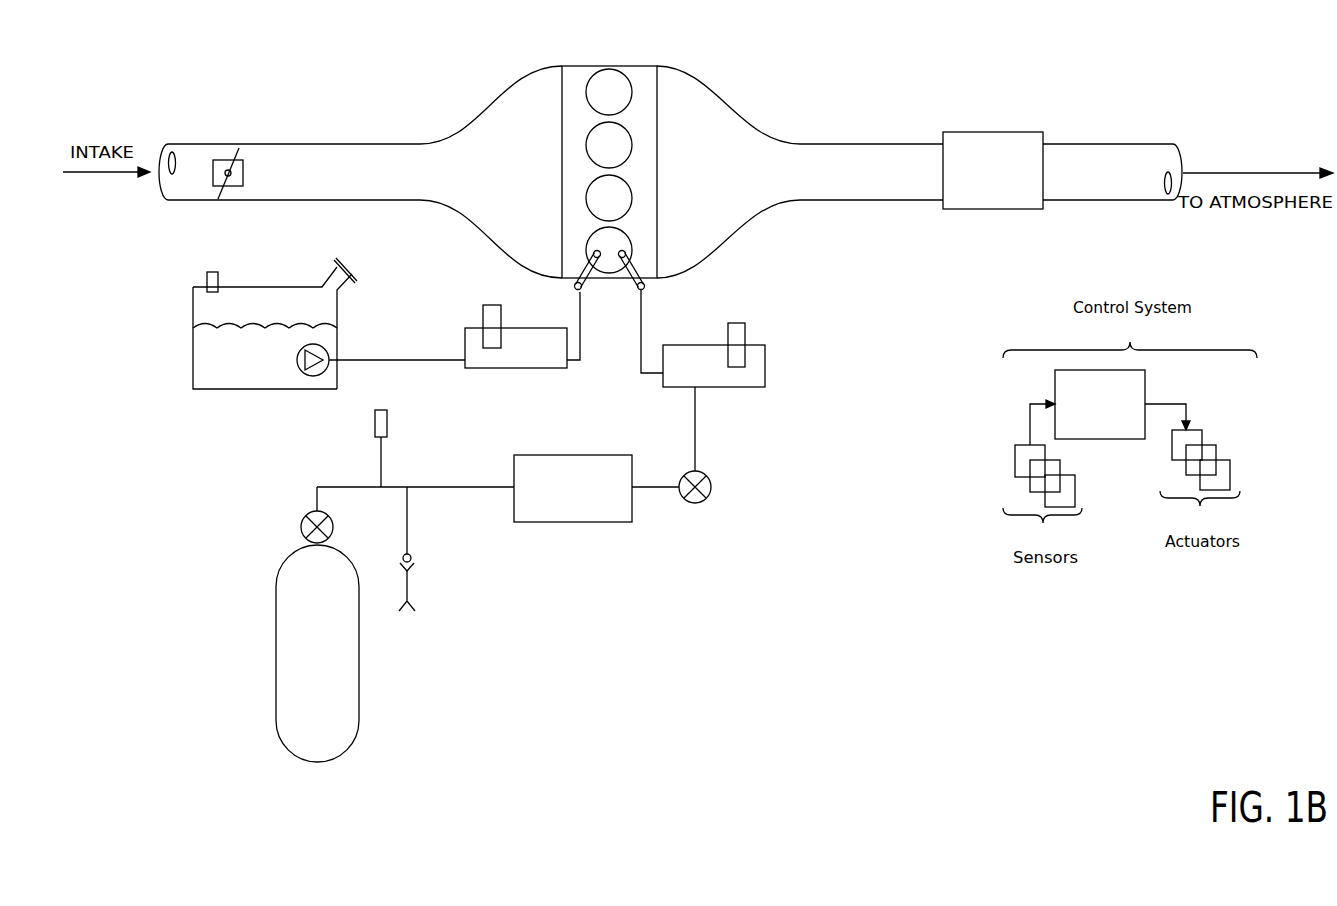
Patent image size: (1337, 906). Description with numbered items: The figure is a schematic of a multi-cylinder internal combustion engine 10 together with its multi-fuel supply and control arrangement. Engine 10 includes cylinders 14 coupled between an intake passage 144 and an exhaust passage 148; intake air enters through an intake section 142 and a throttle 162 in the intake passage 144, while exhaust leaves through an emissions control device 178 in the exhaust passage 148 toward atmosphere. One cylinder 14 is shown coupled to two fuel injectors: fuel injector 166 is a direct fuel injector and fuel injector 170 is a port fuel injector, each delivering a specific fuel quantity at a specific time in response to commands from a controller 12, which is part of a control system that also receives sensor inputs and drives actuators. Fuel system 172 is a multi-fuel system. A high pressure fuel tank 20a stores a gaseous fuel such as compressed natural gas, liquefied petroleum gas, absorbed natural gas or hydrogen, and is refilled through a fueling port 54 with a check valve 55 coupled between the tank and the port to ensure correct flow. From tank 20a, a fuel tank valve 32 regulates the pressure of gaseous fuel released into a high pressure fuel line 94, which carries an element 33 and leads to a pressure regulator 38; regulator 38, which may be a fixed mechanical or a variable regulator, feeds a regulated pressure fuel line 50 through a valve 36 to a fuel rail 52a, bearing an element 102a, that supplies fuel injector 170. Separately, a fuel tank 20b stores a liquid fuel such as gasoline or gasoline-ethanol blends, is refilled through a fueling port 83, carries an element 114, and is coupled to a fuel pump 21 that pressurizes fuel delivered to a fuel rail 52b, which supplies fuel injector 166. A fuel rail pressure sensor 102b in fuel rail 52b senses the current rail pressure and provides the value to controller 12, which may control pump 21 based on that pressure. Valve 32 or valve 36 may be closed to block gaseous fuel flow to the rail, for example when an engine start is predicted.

The internal combustion engine 10 is at (650, 49).
The controller 12 is at (1100, 404).
The cylinders 14 is at (630, 88).
The high pressure fuel tank 20a is at (317, 653).
The fuel tank 20b is at (193, 357).
The fuel pump 21 is at (297, 354).
The fuel tank valve 32 is at (302, 522).
The pressure sensor 33 is at (386, 410).
The valve 36 is at (712, 478).
The pressure regulator 38 is at (572, 455).
The regulated pressure fuel line 50 is at (697, 447).
The fuel rail 52a is at (702, 380).
The fuel rail 52b is at (557, 360).
The fueling port 54 is at (404, 610).
The check valve 55 is at (402, 553).
The fueling port 83 is at (348, 268).
The high pressure fuel line 94 is at (465, 486).
The fuel rail sensor 102a is at (745, 325).
The fuel rail pressure sensor 102b is at (490, 305).
The fuel level sensor 114 is at (207, 279).
The intake passage 142 is at (276, 203).
The intake passage 144 is at (536, 179).
The exhaust passage 148 is at (744, 179).
The throttle 162 is at (243, 180).
The fuel injector 166 is at (578, 291).
The fuel injector 170 is at (645, 291).
The fuel system 172 is at (184, 510).
The emissions control device 178 is at (1011, 179).